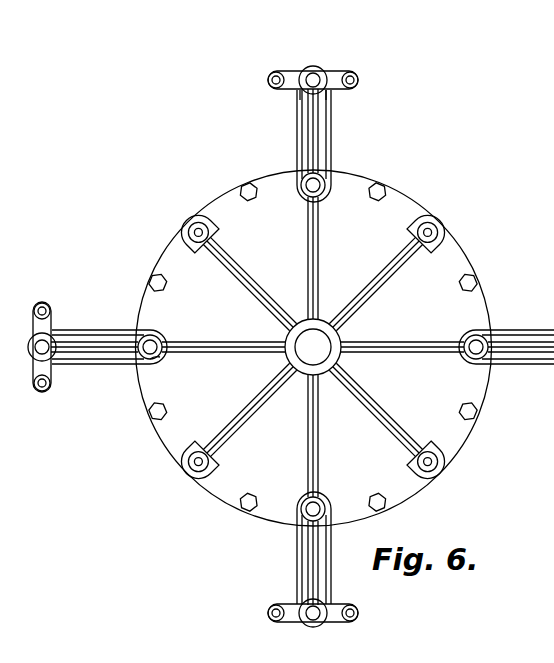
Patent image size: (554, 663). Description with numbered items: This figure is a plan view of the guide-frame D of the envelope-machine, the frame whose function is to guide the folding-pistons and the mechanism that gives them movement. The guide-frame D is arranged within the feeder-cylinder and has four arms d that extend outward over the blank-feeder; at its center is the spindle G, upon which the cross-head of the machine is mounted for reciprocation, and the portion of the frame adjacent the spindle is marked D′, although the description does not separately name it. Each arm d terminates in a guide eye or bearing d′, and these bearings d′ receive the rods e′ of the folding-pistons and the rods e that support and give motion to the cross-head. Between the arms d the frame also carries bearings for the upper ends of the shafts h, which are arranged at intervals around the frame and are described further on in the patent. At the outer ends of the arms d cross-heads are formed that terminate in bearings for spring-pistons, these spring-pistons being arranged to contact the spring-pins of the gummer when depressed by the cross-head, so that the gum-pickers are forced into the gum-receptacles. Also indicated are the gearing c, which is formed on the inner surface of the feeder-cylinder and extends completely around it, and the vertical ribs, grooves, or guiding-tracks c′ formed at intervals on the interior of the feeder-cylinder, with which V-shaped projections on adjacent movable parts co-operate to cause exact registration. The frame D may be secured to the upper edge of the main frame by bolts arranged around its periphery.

The spindle G is at (313, 347).
The guide-frame D is at (312, 346).
The straight spokes D′ is at (321, 373).
The arms d is at (327, 193).
The guide eyes or bearings d′ is at (327, 90).
The rods e is at (312, 186).
The rods of the folding-pistons e′ is at (312, 614).
The shafts h is at (197, 231).
The gearing c is at (162, 357).
The guiding-tracks c′ is at (315, 79).